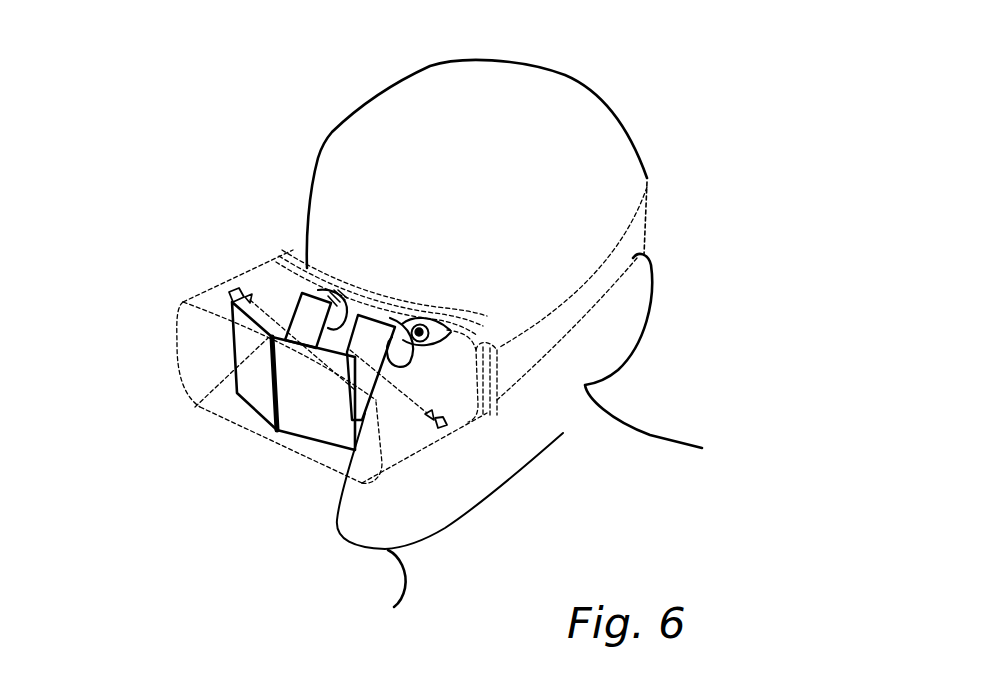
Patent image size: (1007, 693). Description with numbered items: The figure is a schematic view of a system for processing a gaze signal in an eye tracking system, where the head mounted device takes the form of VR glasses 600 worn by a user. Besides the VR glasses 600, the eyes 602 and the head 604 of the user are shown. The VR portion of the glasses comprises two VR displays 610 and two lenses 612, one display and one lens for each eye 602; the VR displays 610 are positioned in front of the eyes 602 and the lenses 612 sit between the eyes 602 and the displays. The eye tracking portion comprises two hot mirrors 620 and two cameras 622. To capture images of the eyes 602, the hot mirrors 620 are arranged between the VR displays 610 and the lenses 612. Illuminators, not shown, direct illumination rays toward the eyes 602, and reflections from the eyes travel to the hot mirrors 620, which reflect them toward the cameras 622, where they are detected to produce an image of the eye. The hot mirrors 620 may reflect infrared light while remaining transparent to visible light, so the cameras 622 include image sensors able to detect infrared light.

The VR glasses 600 is at (178, 320).
The eyes 602 is at (338, 300).
The head 604 is at (625, 130).
The VR displays 610 is at (258, 402).
The lenses 612 is at (342, 303).
The hot mirrors 620 is at (297, 312).
The cameras 622 is at (235, 289).